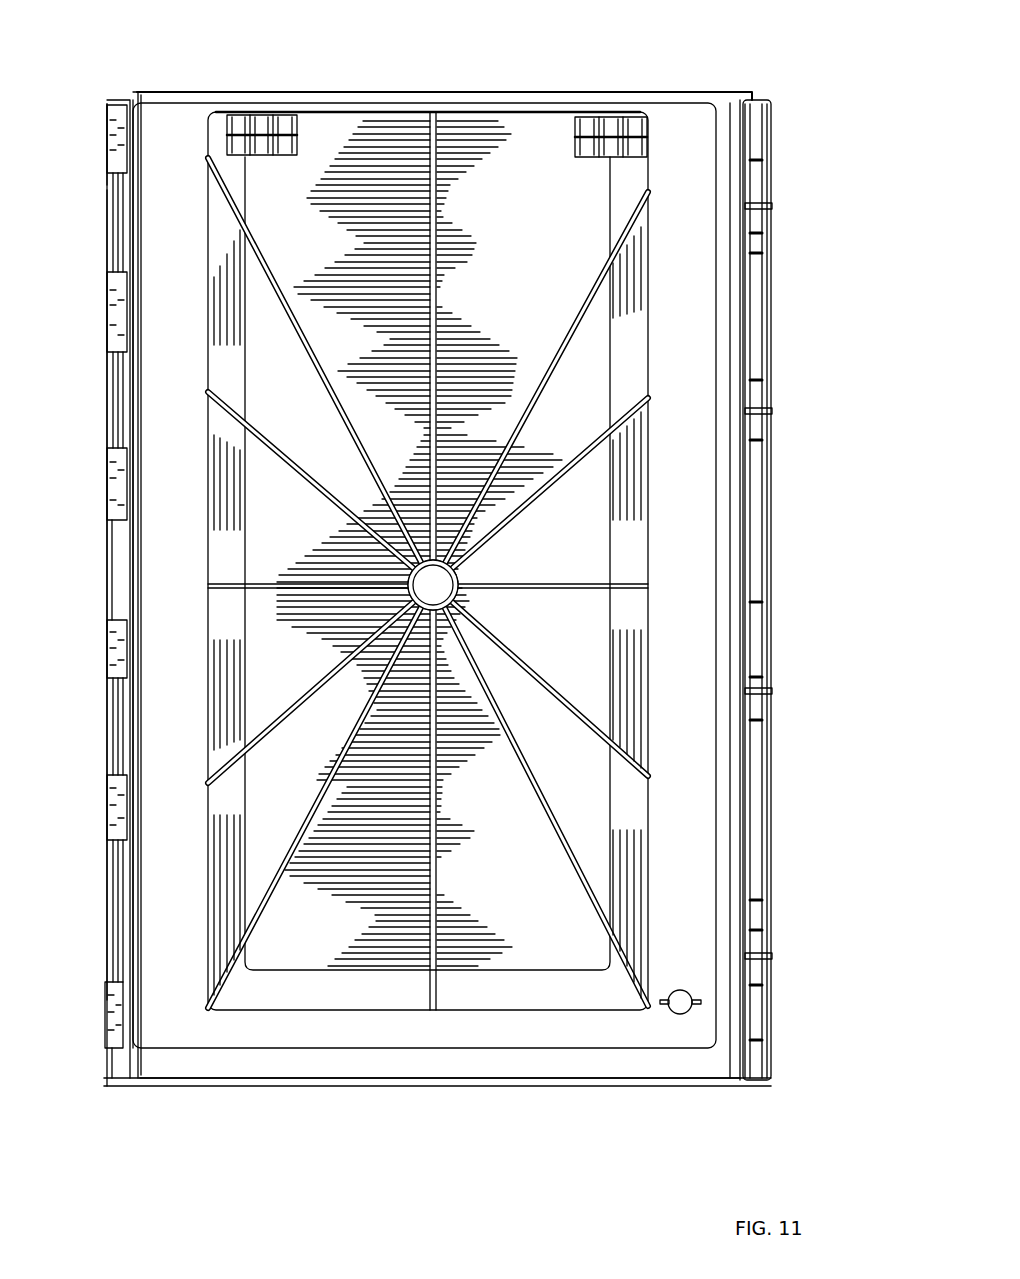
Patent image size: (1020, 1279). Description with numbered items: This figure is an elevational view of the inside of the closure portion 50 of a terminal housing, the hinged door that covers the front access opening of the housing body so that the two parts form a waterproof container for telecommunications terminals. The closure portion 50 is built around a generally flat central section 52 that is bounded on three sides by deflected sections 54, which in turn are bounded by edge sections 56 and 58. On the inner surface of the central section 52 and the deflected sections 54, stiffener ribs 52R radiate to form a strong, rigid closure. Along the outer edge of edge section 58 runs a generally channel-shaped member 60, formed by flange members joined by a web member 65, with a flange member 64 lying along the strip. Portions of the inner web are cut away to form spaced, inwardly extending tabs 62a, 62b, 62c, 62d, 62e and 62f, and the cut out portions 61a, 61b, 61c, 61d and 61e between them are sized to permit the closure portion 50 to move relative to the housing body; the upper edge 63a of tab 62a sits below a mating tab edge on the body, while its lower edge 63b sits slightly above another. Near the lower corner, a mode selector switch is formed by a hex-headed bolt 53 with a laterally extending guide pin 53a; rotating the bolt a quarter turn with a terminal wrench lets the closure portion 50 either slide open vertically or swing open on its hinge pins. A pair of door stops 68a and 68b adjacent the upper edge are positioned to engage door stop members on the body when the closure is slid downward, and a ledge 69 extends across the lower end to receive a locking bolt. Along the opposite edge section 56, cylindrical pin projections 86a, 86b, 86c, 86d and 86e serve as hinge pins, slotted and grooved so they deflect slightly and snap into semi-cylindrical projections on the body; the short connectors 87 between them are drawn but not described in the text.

The closure portion 50 is at (615, 1090).
The central section 52 is at (533, 128).
The stiffener ribs 52R is at (503, 644).
The hex-headed bolt 53 is at (680, 990).
The guide pin 53a is at (660, 1012).
The deflected sections 54 is at (225, 345).
The edge section 56 is at (678, 492).
The edge section 58 is at (205, 500).
The channel-shaped member 60 is at (105, 113).
The cut out portion 61a is at (128, 272).
The cut out portion 61b is at (128, 432).
The cut out portion 61c is at (128, 610).
The cut out portion 61d is at (128, 770).
The cut out portion 61e is at (128, 892).
The tab 62a is at (128, 132).
The tab 62b is at (128, 320).
The tab 62c is at (128, 475).
The tab 62d is at (128, 650).
The tab 62e is at (128, 800).
The tab 62f is at (128, 1005).
The upper edge 63a is at (137, 92).
The lower edge 63b is at (108, 185).
The flange member 64 is at (133, 960).
The web member 65 is at (108, 380).
The door stop 68a is at (600, 157).
The door stop 68b is at (258, 157).
The ledge 69 is at (385, 1078).
The cylindrical pin projection 86a is at (770, 148).
The cylindrical pin projection 86b is at (770, 300).
The cylindrical pin projection 86c is at (770, 545).
The cylindrical pin projection 86d is at (770, 780).
The cylindrical pin projection 86e is at (770, 1012).
The connector 87 is at (770, 205).